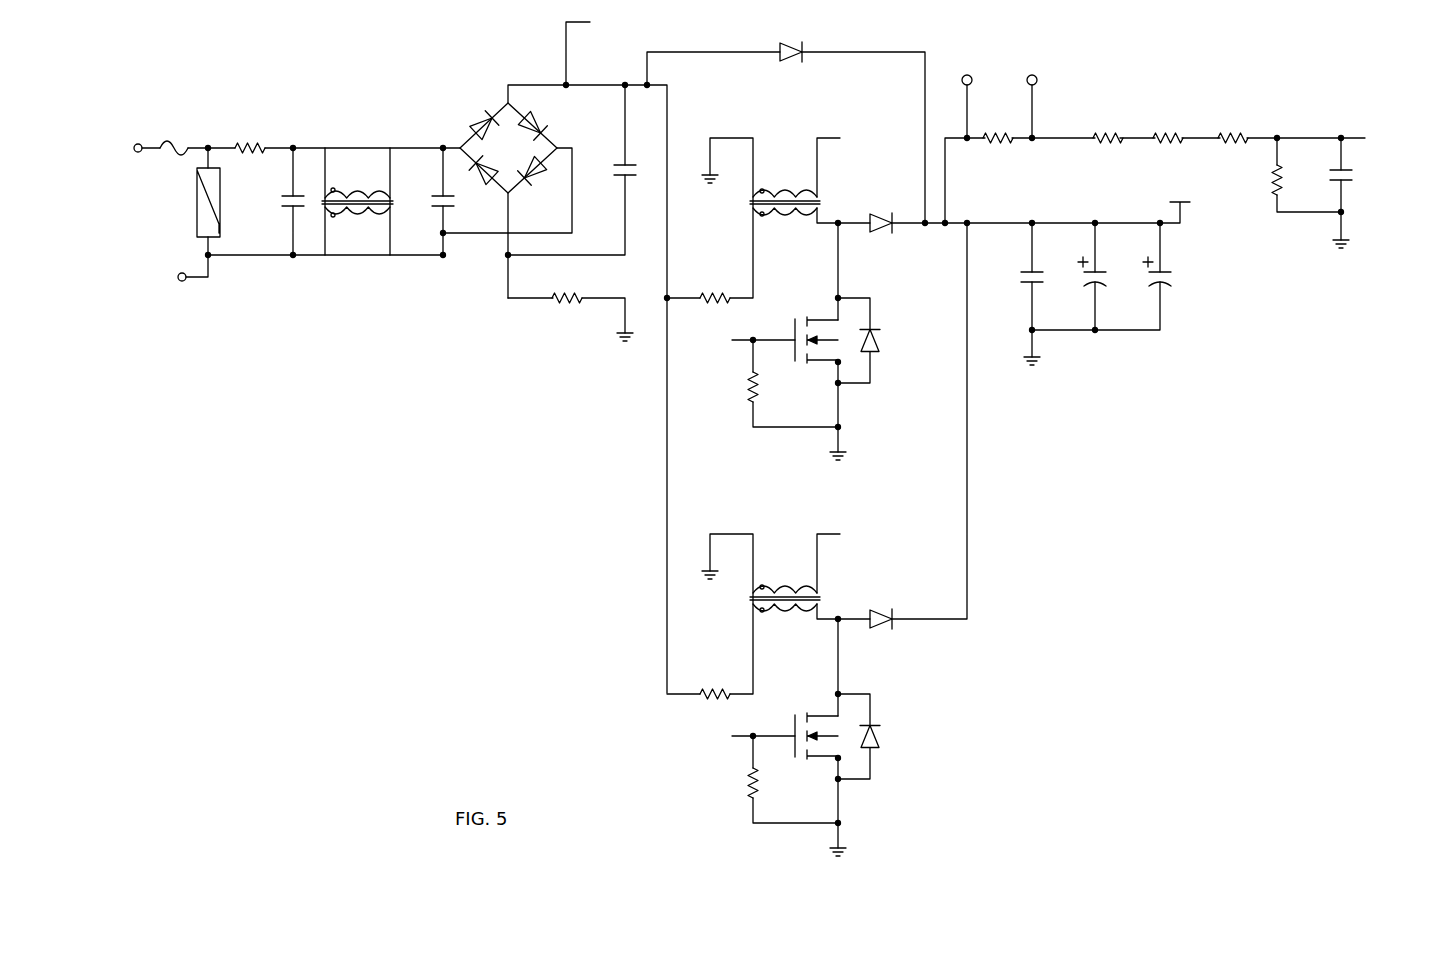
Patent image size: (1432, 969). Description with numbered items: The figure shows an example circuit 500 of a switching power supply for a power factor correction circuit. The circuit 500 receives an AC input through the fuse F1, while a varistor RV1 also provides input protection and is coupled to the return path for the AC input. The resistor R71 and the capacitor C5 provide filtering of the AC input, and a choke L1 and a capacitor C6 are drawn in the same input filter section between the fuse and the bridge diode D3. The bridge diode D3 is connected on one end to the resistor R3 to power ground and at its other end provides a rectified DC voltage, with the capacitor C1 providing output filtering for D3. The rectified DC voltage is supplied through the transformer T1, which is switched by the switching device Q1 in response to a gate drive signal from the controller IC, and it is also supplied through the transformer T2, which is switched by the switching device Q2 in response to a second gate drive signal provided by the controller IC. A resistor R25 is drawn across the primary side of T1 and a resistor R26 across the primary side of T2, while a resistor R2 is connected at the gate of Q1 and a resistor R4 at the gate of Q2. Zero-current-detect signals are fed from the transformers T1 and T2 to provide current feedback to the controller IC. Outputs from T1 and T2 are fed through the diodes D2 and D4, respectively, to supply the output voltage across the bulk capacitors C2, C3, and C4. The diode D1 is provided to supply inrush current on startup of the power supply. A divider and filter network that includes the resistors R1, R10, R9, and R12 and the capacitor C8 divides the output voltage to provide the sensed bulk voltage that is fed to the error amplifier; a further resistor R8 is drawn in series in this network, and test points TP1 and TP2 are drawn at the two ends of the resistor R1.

The circuit 500 is at (348, 62).
The fuse F1 is at (174, 135).
The resistor R71 is at (252, 134).
The varistor RV1 is at (187, 202).
The capacitor C5 is at (279, 203).
The common-mode choke L1 is at (357, 189).
The capacitor C6 is at (428, 203).
The bridge diode D3 is at (503, 144).
The capacitor C1 is at (612, 168).
The diode D1 is at (792, 38).
The resistor R3 is at (567, 286).
The transformer T1 is at (785, 187).
The diode D2 is at (884, 210).
The resistor R25 is at (711, 284).
The switching device Q1 is at (824, 337).
The resistor R2 is at (738, 387).
The transformer T2 is at (785, 583).
The diode D4 is at (891, 606).
The resistor R26 is at (711, 680).
The switching device Q2 is at (824, 733).
The resistor R4 is at (738, 783).
The test point TP1 is at (968, 65).
The test point TP2 is at (1031, 65).
The resistor R1 is at (998, 125).
The resistor R10 is at (1107, 125).
The resistor R9 is at (1168, 125).
The resistor R8 is at (1233, 125).
The resistor R12 is at (1257, 180).
The capacitor C8 is at (1326, 178).
The bulk capacitor C2 is at (1016, 276).
The bulk capacitor C3 is at (1079, 272).
The bulk capacitor C4 is at (1144, 272).